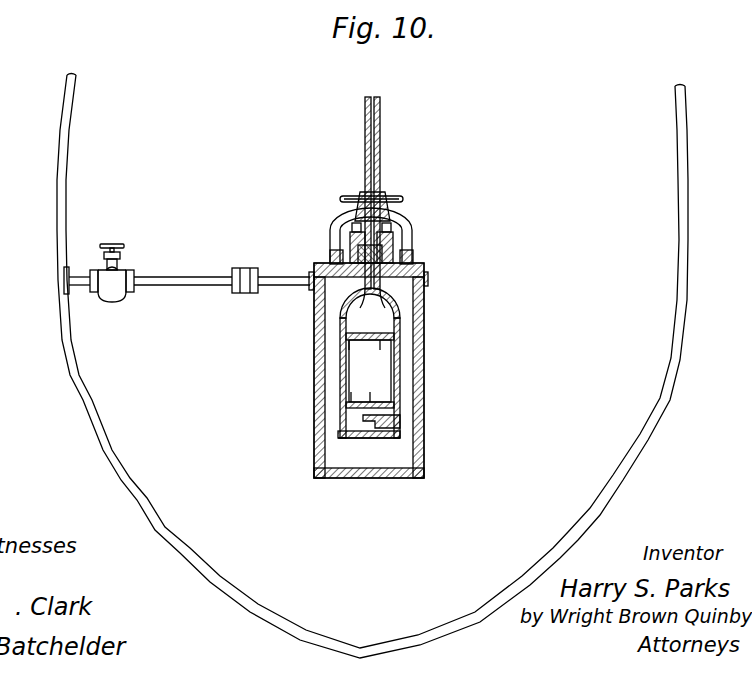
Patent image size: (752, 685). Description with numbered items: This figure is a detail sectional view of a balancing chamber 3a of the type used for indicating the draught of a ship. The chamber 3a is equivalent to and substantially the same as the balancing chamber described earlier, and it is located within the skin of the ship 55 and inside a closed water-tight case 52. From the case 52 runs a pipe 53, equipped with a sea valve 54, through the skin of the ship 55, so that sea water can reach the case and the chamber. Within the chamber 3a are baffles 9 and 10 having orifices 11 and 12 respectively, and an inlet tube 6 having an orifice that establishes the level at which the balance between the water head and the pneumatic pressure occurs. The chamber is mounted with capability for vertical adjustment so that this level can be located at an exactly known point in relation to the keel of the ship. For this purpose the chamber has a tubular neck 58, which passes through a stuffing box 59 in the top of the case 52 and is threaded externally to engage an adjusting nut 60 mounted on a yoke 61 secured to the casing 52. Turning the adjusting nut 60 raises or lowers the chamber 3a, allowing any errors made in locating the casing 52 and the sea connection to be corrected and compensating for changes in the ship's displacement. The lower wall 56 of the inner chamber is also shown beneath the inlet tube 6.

The skin of the ship 55 is at (75, 363).
The pipe 53 is at (275, 282).
The sea valve 54 is at (112, 280).
The water-tight case 52 is at (422, 318).
The adjusting nut 60 is at (378, 190).
The yoke 61 is at (407, 230).
The stuffing box 59 is at (393, 253).
The tubular neck 58 is at (376, 288).
The balancing chamber 3a is at (398, 370).
The orifice 12 is at (352, 341).
The baffle 10 is at (380, 341).
The orifice 11 is at (353, 380).
The baffle 9 is at (372, 390).
The inlet tube 6 is at (400, 422).
The chamber bottom 56 is at (383, 440).